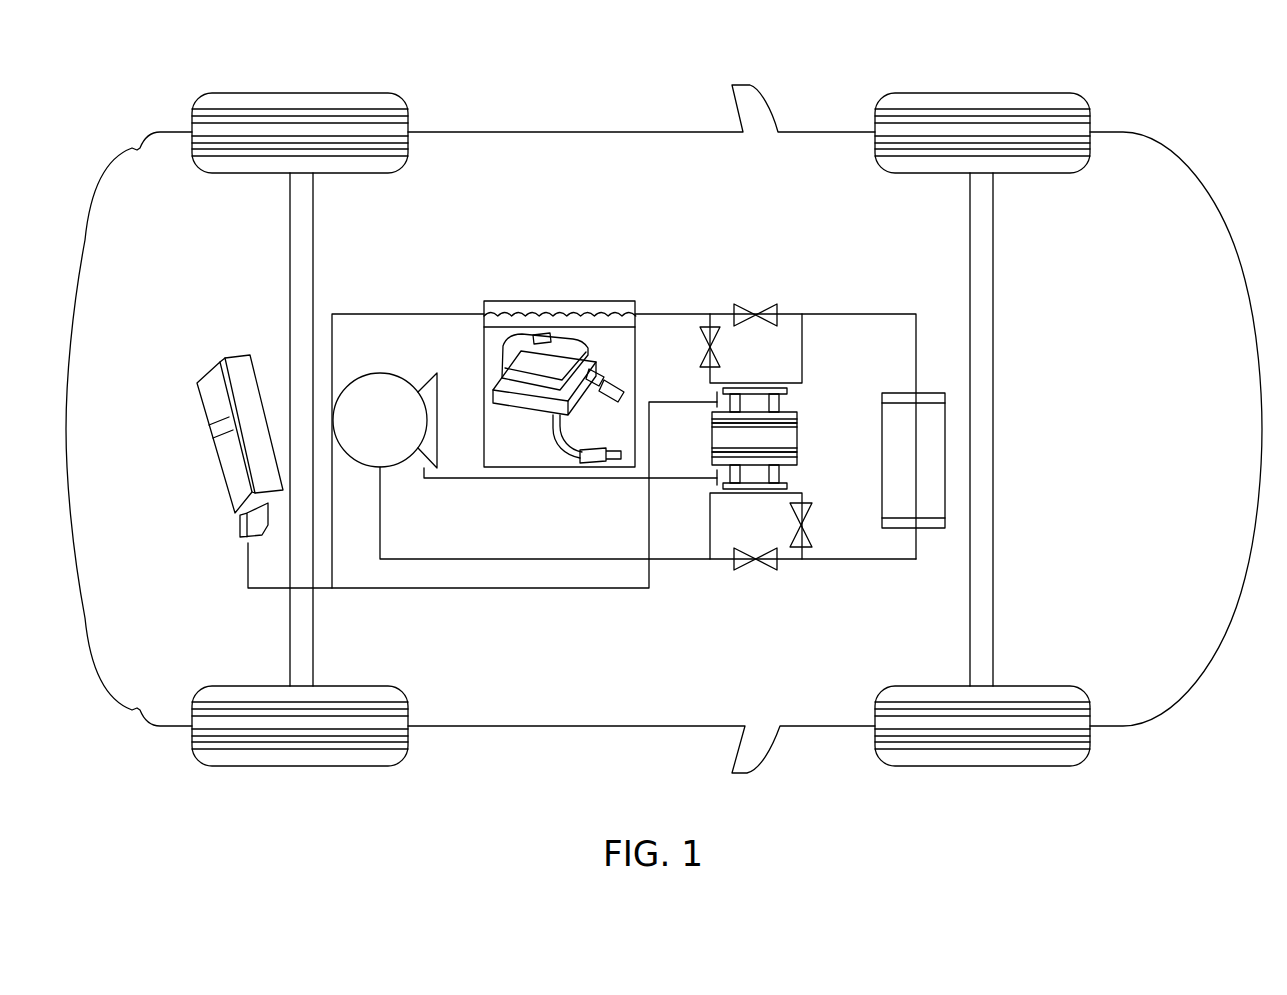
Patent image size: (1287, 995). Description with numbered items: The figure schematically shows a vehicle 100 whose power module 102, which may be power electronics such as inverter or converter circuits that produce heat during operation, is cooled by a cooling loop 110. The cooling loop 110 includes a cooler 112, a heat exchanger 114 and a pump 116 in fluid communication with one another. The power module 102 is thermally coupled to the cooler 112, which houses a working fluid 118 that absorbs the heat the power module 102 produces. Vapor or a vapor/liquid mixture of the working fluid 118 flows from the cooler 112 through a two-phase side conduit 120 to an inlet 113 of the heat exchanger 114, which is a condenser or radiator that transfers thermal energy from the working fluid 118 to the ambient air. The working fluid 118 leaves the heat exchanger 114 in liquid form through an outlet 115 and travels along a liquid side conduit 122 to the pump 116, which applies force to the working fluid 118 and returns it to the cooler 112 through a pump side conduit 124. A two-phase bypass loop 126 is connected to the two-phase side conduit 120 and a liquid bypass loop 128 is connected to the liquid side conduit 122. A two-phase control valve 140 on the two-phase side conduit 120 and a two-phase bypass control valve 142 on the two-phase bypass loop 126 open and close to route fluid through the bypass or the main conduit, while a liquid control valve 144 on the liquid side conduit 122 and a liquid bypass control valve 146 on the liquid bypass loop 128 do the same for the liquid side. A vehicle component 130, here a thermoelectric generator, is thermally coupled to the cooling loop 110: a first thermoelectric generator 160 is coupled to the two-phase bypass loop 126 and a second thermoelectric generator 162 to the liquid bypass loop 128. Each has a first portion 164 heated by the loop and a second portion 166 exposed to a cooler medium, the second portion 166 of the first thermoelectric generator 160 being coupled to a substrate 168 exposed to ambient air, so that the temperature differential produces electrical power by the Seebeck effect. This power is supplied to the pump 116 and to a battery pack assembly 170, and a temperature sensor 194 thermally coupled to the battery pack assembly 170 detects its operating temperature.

The vehicle 100 is at (1163, 105).
The power module 102 is at (520, 402).
The cooling loop 110 is at (870, 298).
The cooler 112 is at (520, 301).
The inlet 113 is at (918, 392).
The heat exchanger 114 is at (947, 462).
The outlet 115 is at (917, 528).
The pump 116 is at (386, 373).
The working fluid 118 is at (587, 320).
The two-phase side conduit 120 is at (855, 313).
The liquid side conduit 122 is at (852, 559).
The pump side conduit 124 is at (393, 314).
The two-phase bypass loop 126 is at (802, 340).
The liquid bypass loop 128 is at (708, 540).
The vehicle component 130 is at (705, 395).
The two-phase control valve 140 is at (743, 305).
The two-phase bypass control valve 142 is at (718, 342).
The liquid control valve 144 is at (747, 570).
The liquid bypass control valve 146 is at (792, 537).
The first thermoelectric generator 160 is at (817, 397).
The second thermoelectric generator 162 is at (808, 475).
The first portion 164 is at (788, 388).
The second portion 166 is at (798, 413).
The substrate 168 is at (717, 438).
The battery pack assembly 170 is at (237, 352).
The temperature sensor 194 is at (220, 443).